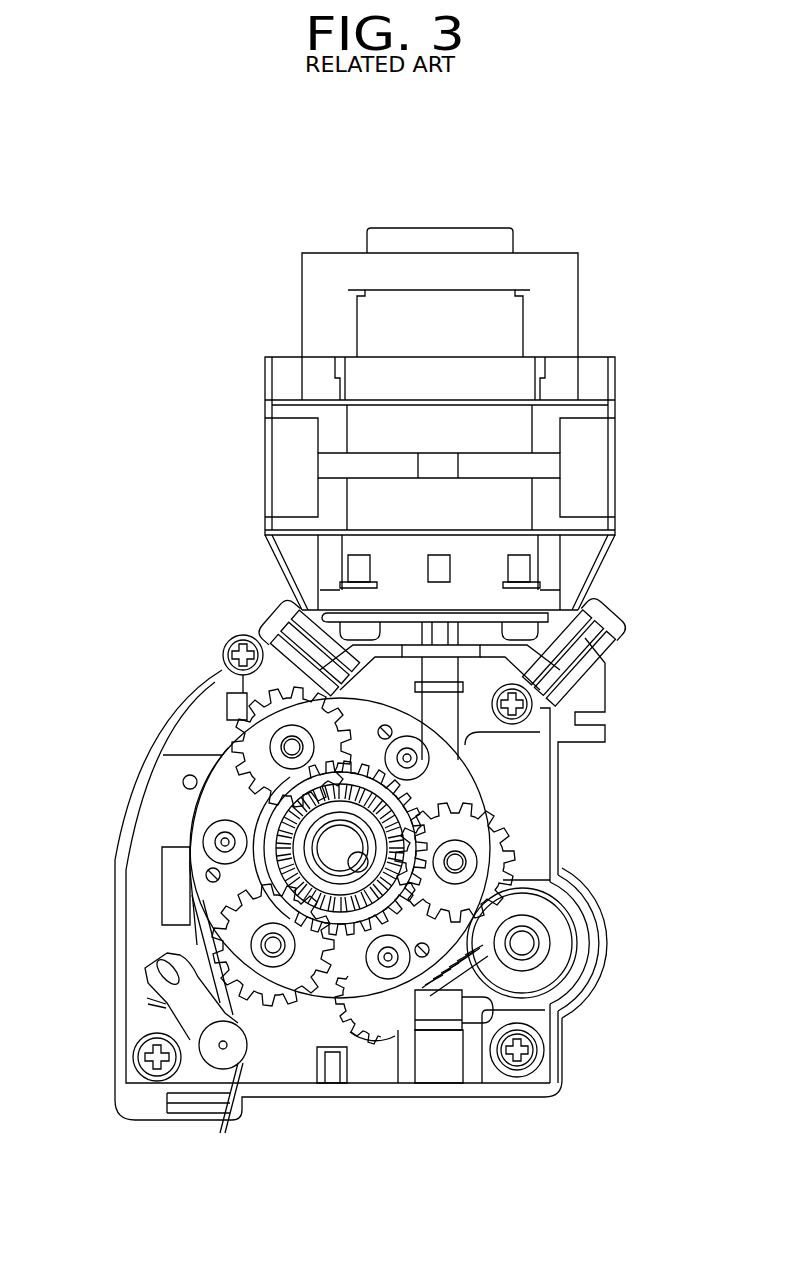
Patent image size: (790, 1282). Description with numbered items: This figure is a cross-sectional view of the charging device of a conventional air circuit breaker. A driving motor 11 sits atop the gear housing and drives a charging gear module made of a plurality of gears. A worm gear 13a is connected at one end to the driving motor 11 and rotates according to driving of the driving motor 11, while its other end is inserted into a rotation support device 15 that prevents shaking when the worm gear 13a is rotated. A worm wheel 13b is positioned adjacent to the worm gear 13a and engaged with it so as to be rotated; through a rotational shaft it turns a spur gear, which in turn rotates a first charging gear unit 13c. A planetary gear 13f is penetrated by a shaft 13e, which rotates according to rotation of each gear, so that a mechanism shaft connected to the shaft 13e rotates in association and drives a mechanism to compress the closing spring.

The driving motor 11 is at (570, 312).
The planetary gear 13f is at (455, 783).
The shaft 13e is at (330, 850).
The worm wheel 13b is at (567, 942).
The first charging gear unit 13c is at (378, 1035).
The rotation support device 15 is at (430, 1076).
The worm gear 13a is at (446, 1016).